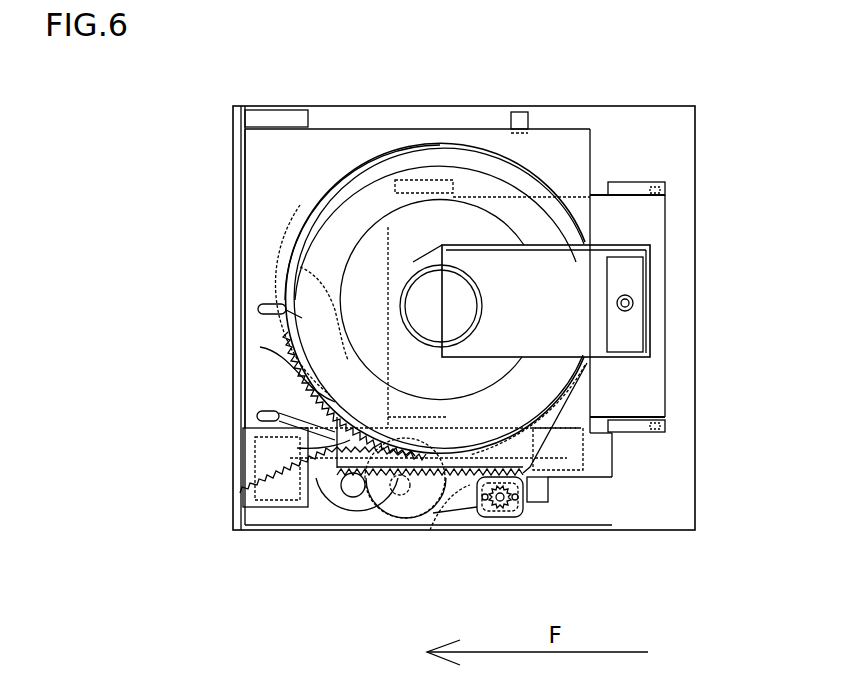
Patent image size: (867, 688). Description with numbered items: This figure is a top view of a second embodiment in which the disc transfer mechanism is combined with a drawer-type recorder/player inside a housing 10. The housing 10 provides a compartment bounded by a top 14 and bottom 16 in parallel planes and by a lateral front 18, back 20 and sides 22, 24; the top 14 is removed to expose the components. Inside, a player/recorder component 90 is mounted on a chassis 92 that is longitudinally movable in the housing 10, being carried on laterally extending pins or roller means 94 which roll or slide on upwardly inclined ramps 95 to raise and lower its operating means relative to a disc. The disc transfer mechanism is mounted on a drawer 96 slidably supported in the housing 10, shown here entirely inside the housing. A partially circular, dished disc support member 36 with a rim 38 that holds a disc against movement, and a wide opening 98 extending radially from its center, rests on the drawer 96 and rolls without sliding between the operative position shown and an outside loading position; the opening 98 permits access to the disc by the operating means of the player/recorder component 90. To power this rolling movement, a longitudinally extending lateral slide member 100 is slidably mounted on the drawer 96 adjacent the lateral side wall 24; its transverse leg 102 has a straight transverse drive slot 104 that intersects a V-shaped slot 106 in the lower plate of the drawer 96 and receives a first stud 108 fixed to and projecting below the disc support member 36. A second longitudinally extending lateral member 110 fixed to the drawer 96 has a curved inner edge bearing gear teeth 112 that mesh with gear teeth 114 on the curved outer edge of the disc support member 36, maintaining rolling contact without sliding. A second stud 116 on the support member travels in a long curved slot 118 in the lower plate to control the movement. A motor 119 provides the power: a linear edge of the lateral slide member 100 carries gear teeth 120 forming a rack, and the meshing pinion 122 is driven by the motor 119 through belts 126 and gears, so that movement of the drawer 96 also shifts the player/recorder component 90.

The housing 10 is at (552, 100).
The top 14 is at (668, 498).
The bottom 16 is at (678, 143).
The front 18 is at (232, 233).
The back 20 is at (695, 192).
The side 22 is at (480, 106).
The lateral side wall 24 is at (377, 530).
The disc support member 36 is at (452, 180).
The rim 38 is at (453, 263).
The player/recorder component 90 is at (567, 303).
The chassis 92 is at (633, 197).
The pins or roller means 94 is at (660, 200).
The ramps 95 is at (622, 187).
The drawer 96 is at (573, 143).
The wide opening 98 is at (360, 215).
The lateral slide member 100 is at (473, 420).
The transverse leg 102 is at (357, 290).
The transverse drive slot 104 is at (445, 342).
The V-shaped slot 106 is at (272, 415).
The first stud 108 is at (300, 267).
The lateral member 110 is at (267, 477).
The gear teeth 112 is at (297, 448).
The gear teeth 114 is at (260, 347).
The second stud 116 is at (430, 530).
The curved slot 118 is at (258, 307).
The motor 119 is at (513, 508).
The gear teeth 120 is at (447, 515).
The pinion 122 is at (327, 515).
The belts 126 is at (463, 512).